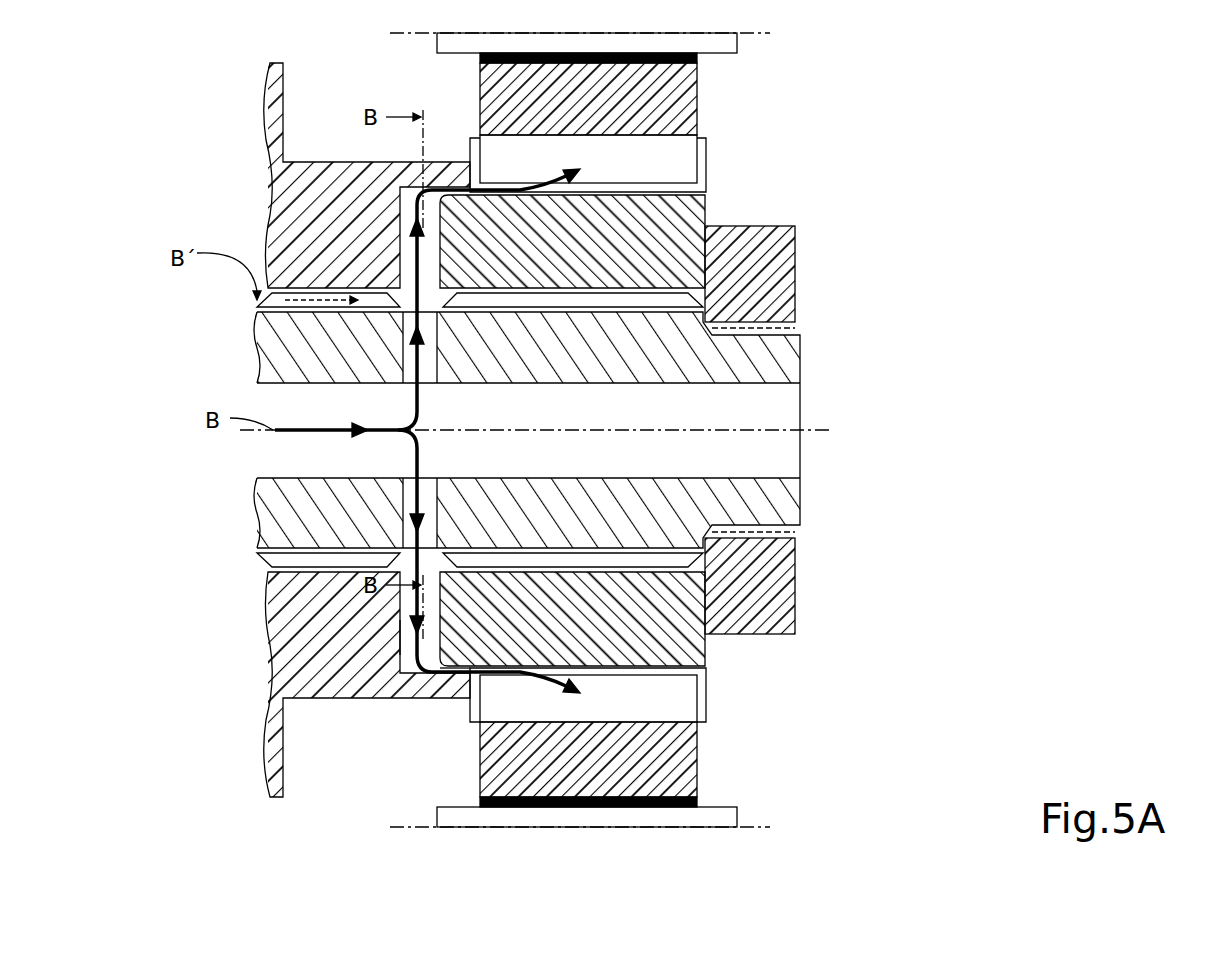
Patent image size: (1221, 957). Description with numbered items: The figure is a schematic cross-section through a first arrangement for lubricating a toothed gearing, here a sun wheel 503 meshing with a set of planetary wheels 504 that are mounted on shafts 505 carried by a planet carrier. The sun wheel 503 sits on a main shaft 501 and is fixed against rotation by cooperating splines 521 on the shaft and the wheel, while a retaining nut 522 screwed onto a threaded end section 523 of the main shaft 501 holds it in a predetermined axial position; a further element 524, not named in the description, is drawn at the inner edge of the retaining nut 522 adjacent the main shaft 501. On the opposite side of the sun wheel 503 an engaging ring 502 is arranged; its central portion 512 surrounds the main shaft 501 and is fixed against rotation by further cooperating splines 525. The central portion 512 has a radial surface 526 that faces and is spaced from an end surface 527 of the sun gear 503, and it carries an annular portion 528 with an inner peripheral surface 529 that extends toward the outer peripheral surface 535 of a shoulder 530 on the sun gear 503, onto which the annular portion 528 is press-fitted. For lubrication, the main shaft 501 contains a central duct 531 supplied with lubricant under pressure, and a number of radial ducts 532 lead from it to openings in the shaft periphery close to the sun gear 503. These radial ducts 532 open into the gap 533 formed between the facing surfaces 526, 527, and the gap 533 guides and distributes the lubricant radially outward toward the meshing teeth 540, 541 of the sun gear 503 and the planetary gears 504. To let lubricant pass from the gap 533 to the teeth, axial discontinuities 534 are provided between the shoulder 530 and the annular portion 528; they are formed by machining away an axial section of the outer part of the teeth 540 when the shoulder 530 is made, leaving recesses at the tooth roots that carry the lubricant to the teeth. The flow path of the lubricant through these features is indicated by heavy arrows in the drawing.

The main shaft 501 is at (243, 343).
The engaging ring 502 is at (266, 90).
The sun wheel 503 is at (715, 207).
The planetary wheels 504 is at (708, 92).
The shafts 505 is at (723, 45).
The central portion 512 is at (300, 203).
The splines 521 is at (686, 563).
The retaining nut 522 is at (805, 265).
The threaded end section 523 is at (788, 353).
The seal ring 524 is at (808, 325).
The splines 525 is at (260, 559).
The radial surface 526 is at (412, 617).
The end surface 527 is at (396, 645).
The annular portion 528 is at (420, 675).
The inner peripheral surface 529 is at (400, 678).
The shoulder 530 is at (463, 172).
The central duct 531 is at (284, 452).
The radial ducts 532 is at (389, 335).
The gap 533 is at (407, 258).
The axial discontinuities 534 is at (444, 688).
The outer peripheral surface 535 is at (450, 690).
The teeth 540 is at (708, 168).
The teeth 541 is at (680, 153).